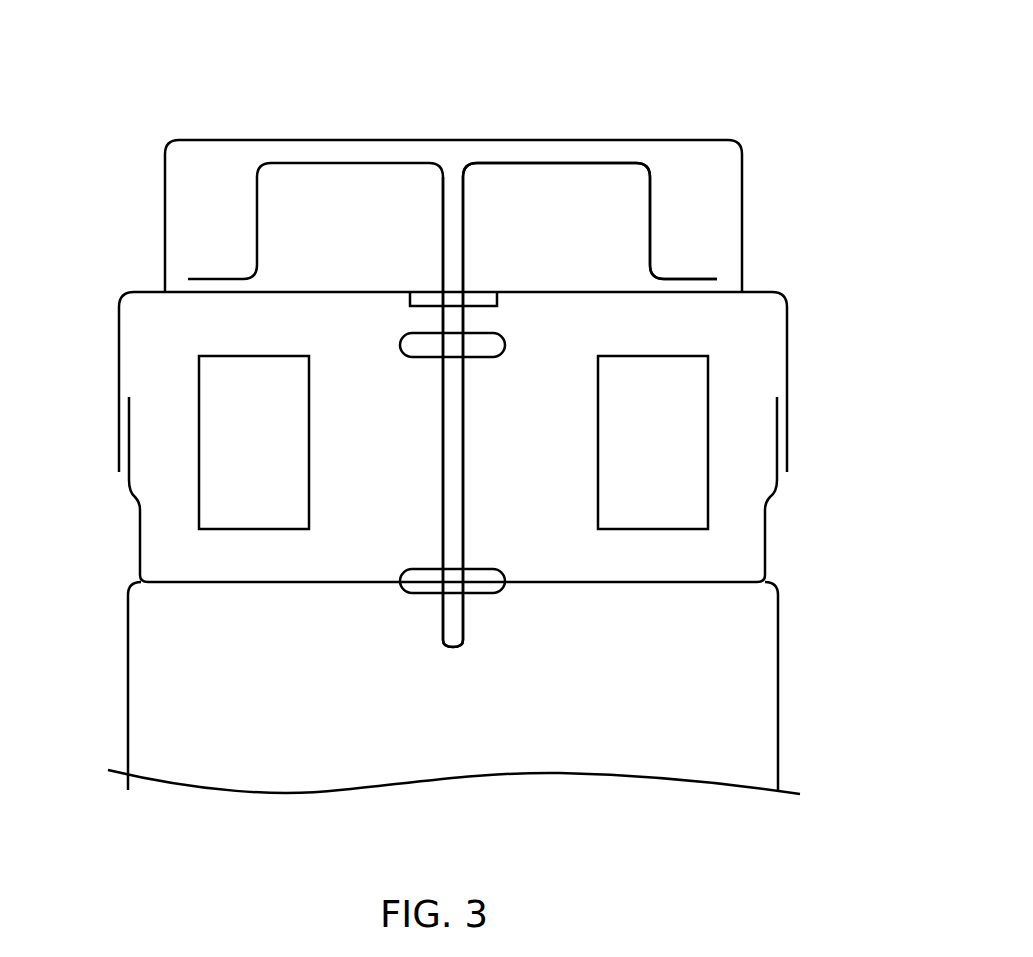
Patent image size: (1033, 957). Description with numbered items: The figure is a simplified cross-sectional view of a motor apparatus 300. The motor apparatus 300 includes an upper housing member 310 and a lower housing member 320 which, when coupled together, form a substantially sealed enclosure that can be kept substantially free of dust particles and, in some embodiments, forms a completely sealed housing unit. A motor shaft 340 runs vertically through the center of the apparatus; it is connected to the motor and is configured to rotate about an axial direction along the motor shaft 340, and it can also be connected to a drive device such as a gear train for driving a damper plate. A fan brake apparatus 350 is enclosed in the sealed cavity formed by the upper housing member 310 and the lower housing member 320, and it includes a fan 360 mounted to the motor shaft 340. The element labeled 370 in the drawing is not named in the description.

The motor apparatus 300 is at (256, 48).
The upper housing member 310 is at (126, 290).
The lower housing member 320 is at (125, 643).
The motor shaft 340 is at (476, 518).
The fan brake apparatus 350 is at (709, 139).
The fan 360 is at (623, 232).
The central divider wall 370 is at (442, 202).